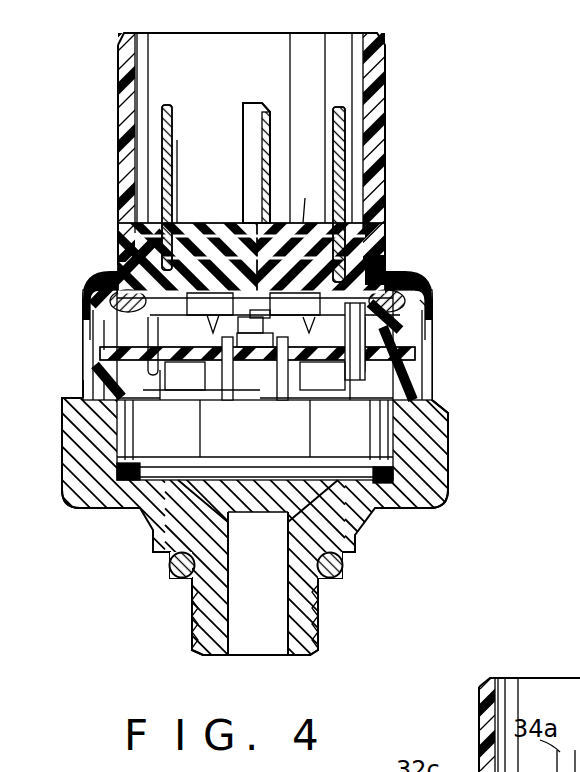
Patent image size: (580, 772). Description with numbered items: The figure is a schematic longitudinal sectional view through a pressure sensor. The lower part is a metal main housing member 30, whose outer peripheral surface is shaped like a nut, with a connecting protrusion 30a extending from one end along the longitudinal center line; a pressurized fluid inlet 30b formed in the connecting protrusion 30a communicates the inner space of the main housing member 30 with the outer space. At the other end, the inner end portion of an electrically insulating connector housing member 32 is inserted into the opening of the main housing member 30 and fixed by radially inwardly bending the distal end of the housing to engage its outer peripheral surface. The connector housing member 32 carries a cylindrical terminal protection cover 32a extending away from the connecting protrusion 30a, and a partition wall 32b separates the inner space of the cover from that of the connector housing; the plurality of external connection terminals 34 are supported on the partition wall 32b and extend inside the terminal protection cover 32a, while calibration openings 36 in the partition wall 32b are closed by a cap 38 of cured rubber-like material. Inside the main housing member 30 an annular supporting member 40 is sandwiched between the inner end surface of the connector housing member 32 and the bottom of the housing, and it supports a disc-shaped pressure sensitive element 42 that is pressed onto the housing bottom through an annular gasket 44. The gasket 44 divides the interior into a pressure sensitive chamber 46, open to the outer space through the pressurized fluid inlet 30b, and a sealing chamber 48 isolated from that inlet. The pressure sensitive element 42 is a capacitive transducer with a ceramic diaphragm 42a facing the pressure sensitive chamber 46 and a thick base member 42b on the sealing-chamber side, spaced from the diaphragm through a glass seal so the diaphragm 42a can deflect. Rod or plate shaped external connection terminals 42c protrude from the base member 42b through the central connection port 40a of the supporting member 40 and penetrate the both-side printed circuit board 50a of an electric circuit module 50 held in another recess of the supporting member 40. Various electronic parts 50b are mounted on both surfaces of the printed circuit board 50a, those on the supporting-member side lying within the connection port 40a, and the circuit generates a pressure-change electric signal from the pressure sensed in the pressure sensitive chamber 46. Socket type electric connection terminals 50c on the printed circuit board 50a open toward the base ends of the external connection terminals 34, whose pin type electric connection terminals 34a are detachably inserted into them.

The main housing member 30 is at (458, 433).
The connecting protrusion 30a is at (322, 617).
The pressurized fluid inlet 30b is at (232, 577).
The connector housing member 32 is at (402, 252).
The terminal protection cover 32a is at (387, 160).
The partition wall 32b is at (188, 223).
The external connection terminals 34 is at (243, 104).
The pin type electric connection terminals 34a is at (508, 312).
The calibration openings 36 is at (386, 284).
The cap 38 is at (310, 196).
The supporting member 40 is at (432, 390).
The central connection port 40a is at (82, 385).
The pressure sensitive element 42 is at (168, 478).
The diaphragm 42a is at (362, 517).
The base member 42b is at (413, 420).
The external connection terminals 42c is at (280, 378).
The gasket 44 is at (445, 492).
The pressure sensitive chamber 46 is at (198, 494).
The sealing chamber 48 is at (432, 323).
The electric circuit module 50 is at (393, 293).
The both-side printed circuit board 50a is at (432, 373).
The electronic parts 50b is at (203, 223).
The socket type electric connection terminals 50c is at (82, 300).